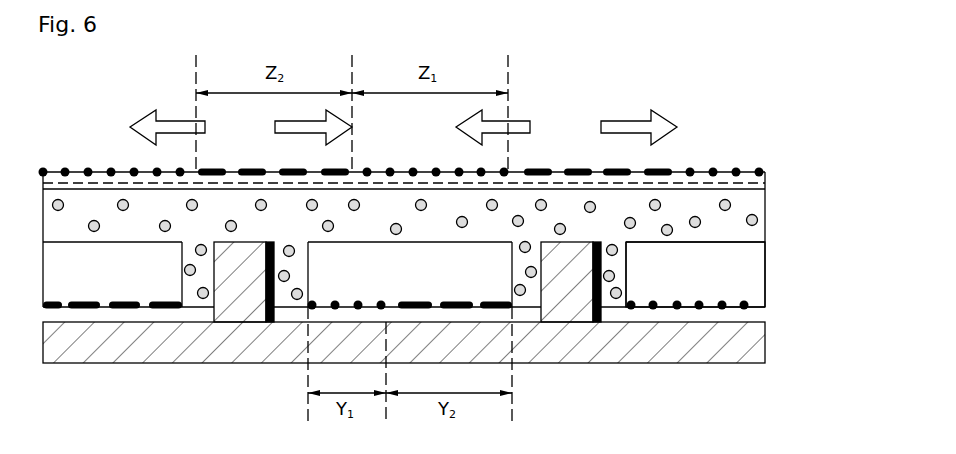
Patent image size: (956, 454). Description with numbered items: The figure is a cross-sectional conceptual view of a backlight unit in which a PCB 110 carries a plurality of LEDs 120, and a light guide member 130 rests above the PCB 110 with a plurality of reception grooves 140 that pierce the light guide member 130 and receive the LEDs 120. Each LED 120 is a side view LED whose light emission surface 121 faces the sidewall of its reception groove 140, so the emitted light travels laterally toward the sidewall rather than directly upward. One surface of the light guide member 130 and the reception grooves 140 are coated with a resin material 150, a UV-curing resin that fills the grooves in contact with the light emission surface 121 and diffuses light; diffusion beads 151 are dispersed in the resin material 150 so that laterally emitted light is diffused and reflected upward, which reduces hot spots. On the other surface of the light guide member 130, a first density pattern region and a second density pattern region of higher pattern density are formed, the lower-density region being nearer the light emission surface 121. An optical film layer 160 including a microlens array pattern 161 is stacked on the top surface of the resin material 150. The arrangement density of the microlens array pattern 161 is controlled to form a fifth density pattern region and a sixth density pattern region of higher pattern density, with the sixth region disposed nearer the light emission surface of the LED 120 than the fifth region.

The PCB 110 is at (757, 343).
The LED 120 is at (562, 313).
The light emission surface 121 is at (602, 322).
The light guide member 130 is at (752, 260).
The reception groove 140 is at (626, 273).
The resin material 150 is at (452, 239).
The diffusion beads 151 is at (752, 220).
The optical film layer 160 is at (758, 180).
The microlens array pattern 161 is at (765, 172).